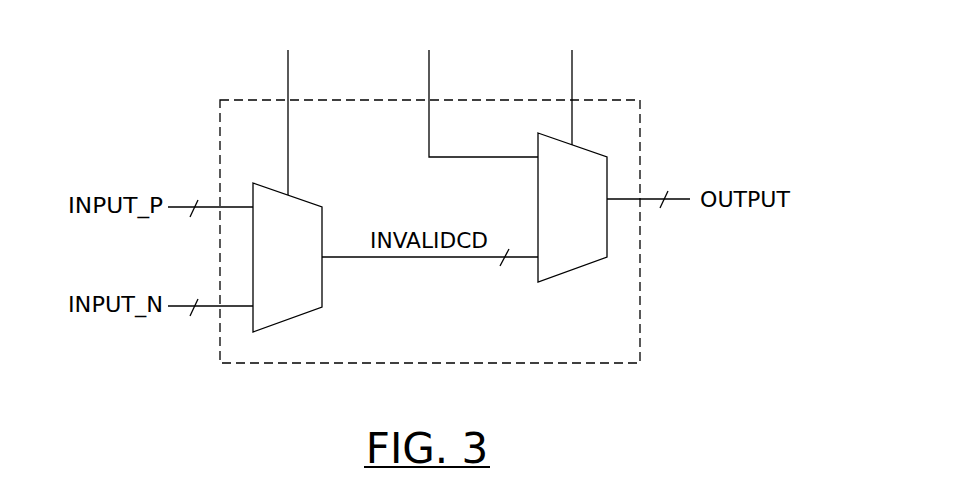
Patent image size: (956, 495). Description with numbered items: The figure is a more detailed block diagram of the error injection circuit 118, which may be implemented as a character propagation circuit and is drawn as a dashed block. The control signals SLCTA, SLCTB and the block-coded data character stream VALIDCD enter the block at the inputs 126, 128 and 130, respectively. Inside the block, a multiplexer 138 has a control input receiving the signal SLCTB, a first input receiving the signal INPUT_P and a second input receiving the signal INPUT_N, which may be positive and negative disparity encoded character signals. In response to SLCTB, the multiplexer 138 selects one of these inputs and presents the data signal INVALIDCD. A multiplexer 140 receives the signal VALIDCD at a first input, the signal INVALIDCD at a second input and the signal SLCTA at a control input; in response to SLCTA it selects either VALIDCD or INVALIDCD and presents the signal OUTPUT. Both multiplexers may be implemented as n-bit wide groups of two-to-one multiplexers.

The error injection circuit 118 is at (600, 99).
The input 126 is at (287, 99).
The input 128 is at (428, 99).
The input 130 is at (571, 99).
The multiplexer 138 is at (297, 197).
The multiplexer 140 is at (557, 275).